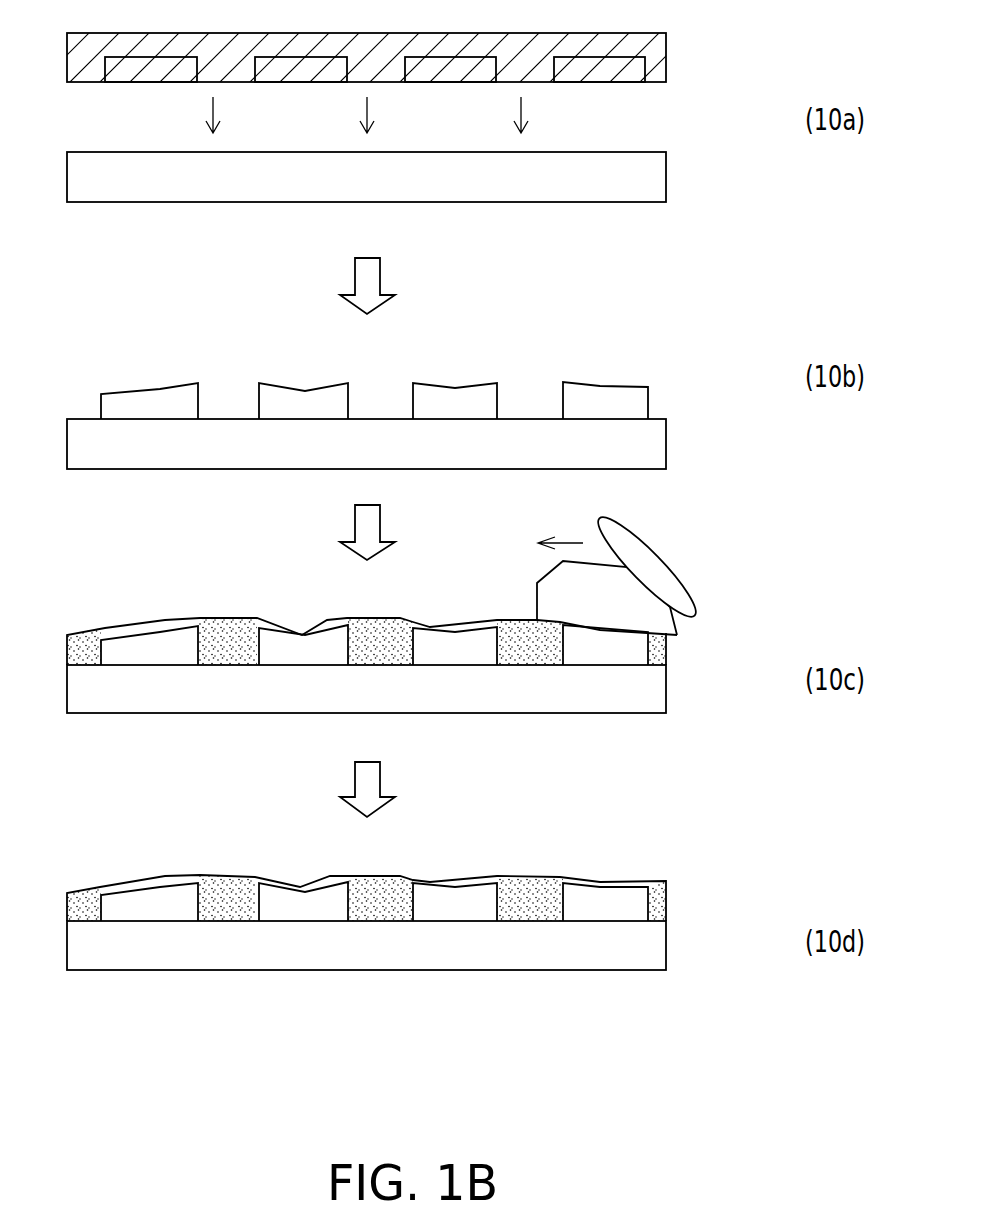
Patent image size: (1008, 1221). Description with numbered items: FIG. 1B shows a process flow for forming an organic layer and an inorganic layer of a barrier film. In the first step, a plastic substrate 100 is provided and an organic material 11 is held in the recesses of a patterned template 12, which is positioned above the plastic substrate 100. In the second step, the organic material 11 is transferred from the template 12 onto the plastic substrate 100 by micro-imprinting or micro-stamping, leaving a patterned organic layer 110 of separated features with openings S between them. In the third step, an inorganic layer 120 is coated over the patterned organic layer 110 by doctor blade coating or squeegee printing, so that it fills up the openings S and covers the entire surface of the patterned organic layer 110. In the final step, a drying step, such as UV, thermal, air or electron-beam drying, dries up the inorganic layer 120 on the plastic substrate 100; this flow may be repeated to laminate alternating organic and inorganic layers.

The template 12 is at (660, 43).
The organic material 11 is at (633, 73).
The plastic substrate 100 is at (660, 182).
The patterned organic layer 110 is at (640, 402).
The inorganic layer 120 is at (657, 652).
The openings S is at (541, 389).